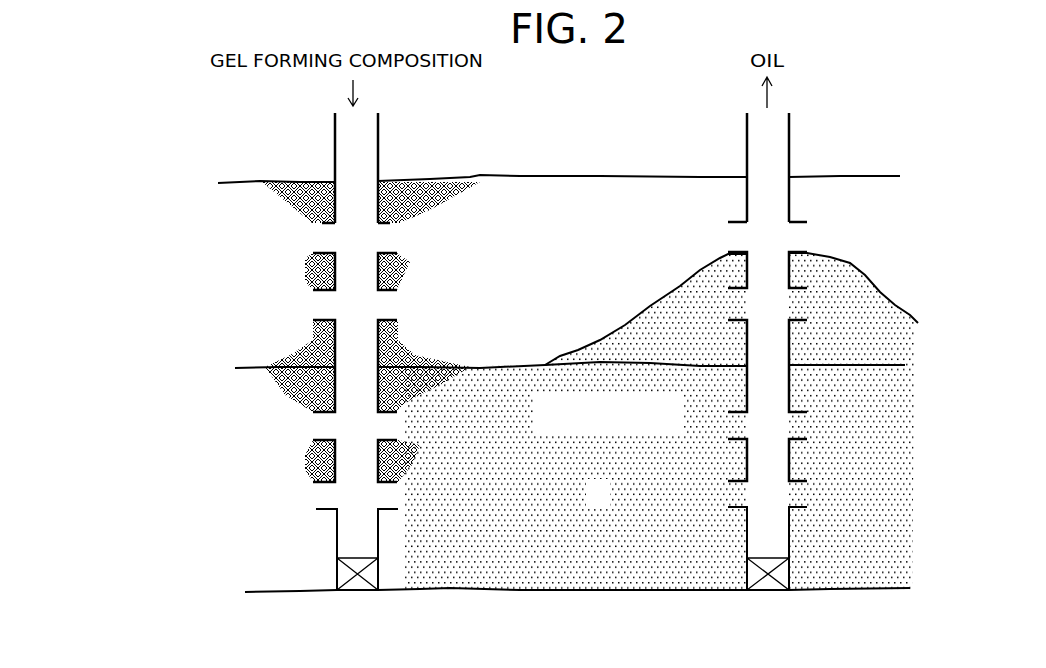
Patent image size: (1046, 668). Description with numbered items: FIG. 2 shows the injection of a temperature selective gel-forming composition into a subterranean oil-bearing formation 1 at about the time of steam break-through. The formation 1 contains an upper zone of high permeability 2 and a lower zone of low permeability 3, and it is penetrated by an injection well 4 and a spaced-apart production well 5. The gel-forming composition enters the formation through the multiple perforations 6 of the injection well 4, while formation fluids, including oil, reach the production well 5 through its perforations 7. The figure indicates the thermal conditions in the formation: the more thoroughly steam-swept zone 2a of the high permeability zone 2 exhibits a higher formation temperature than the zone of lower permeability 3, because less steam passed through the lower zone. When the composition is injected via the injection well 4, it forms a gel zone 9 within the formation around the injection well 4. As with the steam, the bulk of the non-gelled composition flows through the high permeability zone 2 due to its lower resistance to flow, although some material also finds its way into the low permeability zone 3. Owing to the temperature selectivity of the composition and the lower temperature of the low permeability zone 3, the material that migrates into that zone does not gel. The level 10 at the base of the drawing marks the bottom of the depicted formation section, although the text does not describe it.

The subterranean oil-bearing formation 1 is at (330, 424).
The upper zone of high permeability 2 is at (612, 292).
The steam-swept zone of high permeability zone 2a is at (521, 216).
The lower zone of low permeability 3 is at (606, 503).
The injection well 4 is at (380, 152).
The production well 5 is at (791, 148).
The perforations 6 is at (318, 236).
The perforations 7 is at (785, 238).
The gel zone 9 is at (417, 178).
The bottom of formation 10 is at (420, 590).